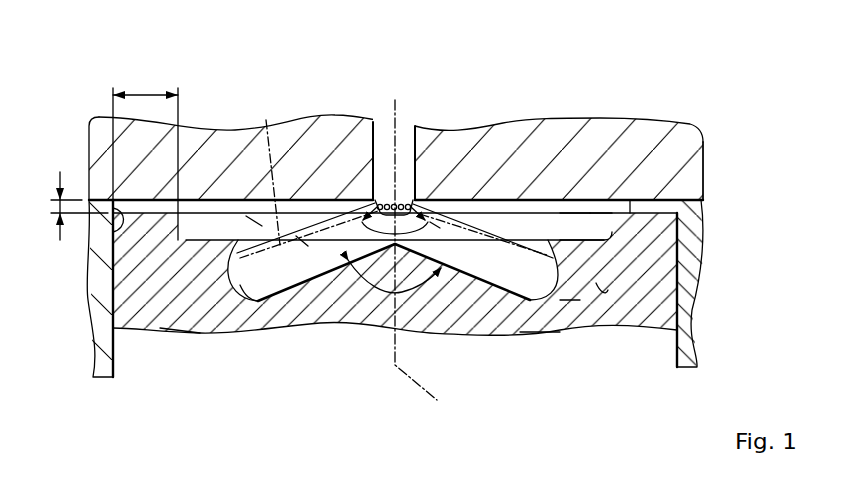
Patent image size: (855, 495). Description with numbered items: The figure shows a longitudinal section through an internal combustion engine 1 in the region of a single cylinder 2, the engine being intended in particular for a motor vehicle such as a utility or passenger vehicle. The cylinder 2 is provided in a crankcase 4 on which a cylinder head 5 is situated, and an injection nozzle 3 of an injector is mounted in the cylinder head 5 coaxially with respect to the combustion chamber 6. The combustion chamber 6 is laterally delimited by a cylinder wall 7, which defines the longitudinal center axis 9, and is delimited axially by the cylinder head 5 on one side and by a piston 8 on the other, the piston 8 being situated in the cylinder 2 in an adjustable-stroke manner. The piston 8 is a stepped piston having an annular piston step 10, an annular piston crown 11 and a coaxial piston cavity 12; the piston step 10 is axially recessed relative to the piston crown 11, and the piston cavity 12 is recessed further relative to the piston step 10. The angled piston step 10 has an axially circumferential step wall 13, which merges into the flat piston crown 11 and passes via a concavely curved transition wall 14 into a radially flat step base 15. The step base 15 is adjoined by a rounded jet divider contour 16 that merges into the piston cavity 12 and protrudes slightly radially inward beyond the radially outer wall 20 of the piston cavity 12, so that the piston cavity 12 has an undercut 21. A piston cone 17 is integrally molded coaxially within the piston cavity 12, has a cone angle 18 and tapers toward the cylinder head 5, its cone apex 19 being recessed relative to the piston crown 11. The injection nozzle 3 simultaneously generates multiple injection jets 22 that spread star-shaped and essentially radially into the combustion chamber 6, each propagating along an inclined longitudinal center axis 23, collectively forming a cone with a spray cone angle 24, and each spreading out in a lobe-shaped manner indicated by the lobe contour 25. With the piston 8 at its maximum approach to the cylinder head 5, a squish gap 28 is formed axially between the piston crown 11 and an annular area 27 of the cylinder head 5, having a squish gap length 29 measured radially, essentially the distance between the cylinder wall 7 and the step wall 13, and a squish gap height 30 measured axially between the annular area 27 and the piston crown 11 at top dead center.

The internal combustion engine 1 is at (727, 136).
The cylinder 2 is at (165, 372).
The injection nozzle 3 is at (400, 140).
The crankcase 4 is at (105, 323).
The cylinder head 5 is at (643, 140).
The combustion chamber 6 is at (303, 262).
The cylinder wall 7 is at (113, 253).
The piston 8 is at (541, 330).
The longitudinal center axis 9 is at (423, 258).
The piston step 10 is at (578, 240).
The piston crown 11 is at (653, 213).
The piston cavity 12 is at (577, 297).
The step wall 13 is at (597, 217).
The transition wall 14 is at (630, 247).
The step base 15 is at (583, 216).
The jet divider contour 16 is at (600, 290).
The piston cone 17 is at (490, 267).
The cone angle 18 is at (380, 294).
The cone apex 19 is at (362, 206).
The radially outer wall 20 is at (238, 272).
The undercut 21 is at (252, 288).
The injection jets 22 is at (302, 243).
The inclined longitudinal center axis 23 is at (266, 120).
The spray cone angle 24 is at (440, 220).
The lobe contour 25 is at (253, 222).
The annular area 27 is at (637, 220).
The squish gap 28 is at (665, 207).
The squish gap length 29 is at (142, 92).
The squish gap height 30 is at (45, 206).